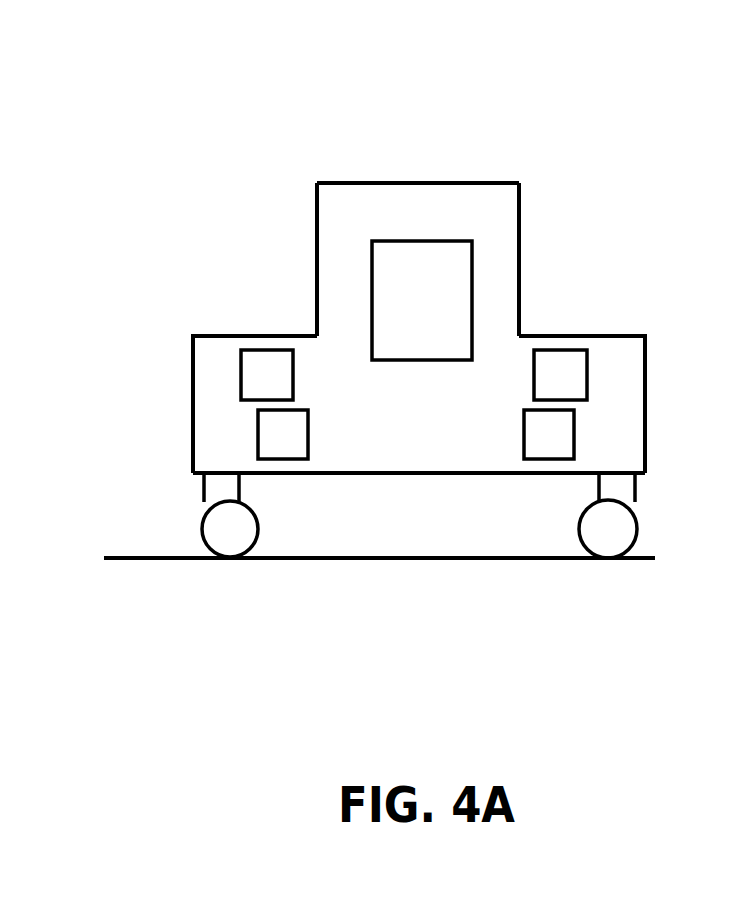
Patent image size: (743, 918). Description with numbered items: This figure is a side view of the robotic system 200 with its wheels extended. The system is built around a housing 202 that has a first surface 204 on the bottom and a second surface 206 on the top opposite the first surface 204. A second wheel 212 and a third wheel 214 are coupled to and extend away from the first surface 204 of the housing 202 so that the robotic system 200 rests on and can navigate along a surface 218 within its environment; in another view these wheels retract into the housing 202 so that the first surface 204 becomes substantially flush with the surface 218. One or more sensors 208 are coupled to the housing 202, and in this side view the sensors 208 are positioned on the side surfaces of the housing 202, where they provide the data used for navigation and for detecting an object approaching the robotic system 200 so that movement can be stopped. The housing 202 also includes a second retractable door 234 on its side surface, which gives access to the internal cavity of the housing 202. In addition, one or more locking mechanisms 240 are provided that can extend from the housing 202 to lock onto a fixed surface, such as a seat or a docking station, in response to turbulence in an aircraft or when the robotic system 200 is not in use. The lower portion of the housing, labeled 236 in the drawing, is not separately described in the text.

The robotic system 200 is at (604, 82).
The housing 202 is at (480, 213).
The first surface 204 is at (490, 488).
The second surface 206 is at (392, 172).
The sensors 208 is at (267, 350).
The second wheel 212 is at (232, 543).
The third wheel 214 is at (612, 545).
The surface 218 is at (167, 562).
The second retractable door 234 is at (428, 361).
The lower body portion 236 is at (220, 334).
The locking mechanisms 240 is at (293, 460).